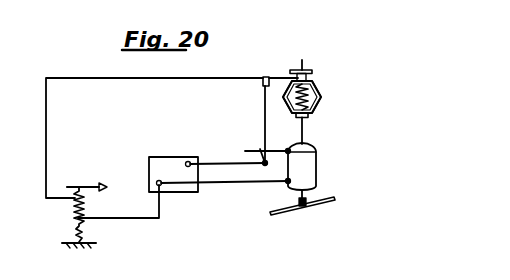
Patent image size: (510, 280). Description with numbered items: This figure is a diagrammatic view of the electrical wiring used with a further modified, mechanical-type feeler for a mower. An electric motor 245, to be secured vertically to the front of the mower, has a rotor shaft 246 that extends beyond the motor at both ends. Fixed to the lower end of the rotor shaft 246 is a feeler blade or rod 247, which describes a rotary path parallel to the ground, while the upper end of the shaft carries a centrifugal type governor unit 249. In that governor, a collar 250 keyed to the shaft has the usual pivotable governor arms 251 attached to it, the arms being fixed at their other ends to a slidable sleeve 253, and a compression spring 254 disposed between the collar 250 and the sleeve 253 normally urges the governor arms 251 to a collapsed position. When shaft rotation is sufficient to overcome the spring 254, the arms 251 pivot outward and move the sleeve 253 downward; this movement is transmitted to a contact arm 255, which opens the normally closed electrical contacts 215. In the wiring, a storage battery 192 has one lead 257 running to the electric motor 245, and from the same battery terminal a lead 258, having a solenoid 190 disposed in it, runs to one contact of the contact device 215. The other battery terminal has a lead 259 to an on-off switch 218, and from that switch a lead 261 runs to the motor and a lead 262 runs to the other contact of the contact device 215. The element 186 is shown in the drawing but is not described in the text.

The arrow switch arm 186 is at (88, 186).
The solenoid 190 is at (71, 206).
The storage battery 192 is at (150, 157).
The electrical contacts 215 is at (260, 86).
The on-off switch 218 is at (245, 151).
The electric motor 245 is at (310, 172).
The rotor shaft 246 is at (303, 128).
The feeler blade 247 is at (325, 203).
The centrifugal type governor unit 249 is at (323, 94).
The collar 250 is at (308, 116).
The governor arms 251 is at (317, 106).
The slidable sleeve 253 is at (311, 72).
The compression spring 254 is at (311, 84).
The contact arm 255 is at (276, 77).
The lead 257 is at (231, 184).
The lead 258 is at (137, 219).
The lead 259 is at (217, 163).
The lead 261 is at (286, 149).
The lead 262 is at (265, 112).